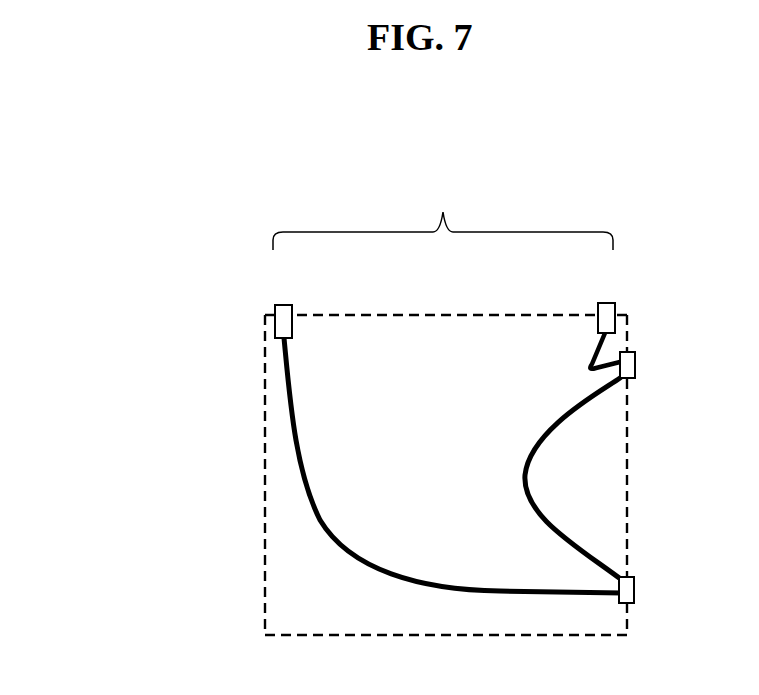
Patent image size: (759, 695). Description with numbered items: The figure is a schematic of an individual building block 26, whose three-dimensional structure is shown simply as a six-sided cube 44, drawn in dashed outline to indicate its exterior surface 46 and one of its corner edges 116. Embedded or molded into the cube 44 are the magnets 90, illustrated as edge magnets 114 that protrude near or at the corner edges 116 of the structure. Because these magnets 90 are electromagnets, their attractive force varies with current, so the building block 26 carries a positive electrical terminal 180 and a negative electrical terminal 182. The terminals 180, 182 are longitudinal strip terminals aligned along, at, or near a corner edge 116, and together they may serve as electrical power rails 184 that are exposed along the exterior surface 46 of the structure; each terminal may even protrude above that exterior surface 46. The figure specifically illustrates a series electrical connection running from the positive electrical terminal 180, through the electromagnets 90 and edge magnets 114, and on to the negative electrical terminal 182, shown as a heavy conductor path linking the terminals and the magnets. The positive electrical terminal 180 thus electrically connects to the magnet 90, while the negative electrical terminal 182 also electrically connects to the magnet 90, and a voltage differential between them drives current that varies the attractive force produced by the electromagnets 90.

The building block 26 is at (116, 349).
The six-sided cube 44 is at (265, 621).
The exterior surface 46 is at (425, 313).
The corner edge 116 is at (628, 636).
The positive electrical terminal 180 is at (275, 308).
The negative electrical terminal 182 is at (616, 308).
The electrical power rails 184 is at (443, 219).
The magnet 90 is at (636, 365).
The edge magnet 114 is at (627, 477).